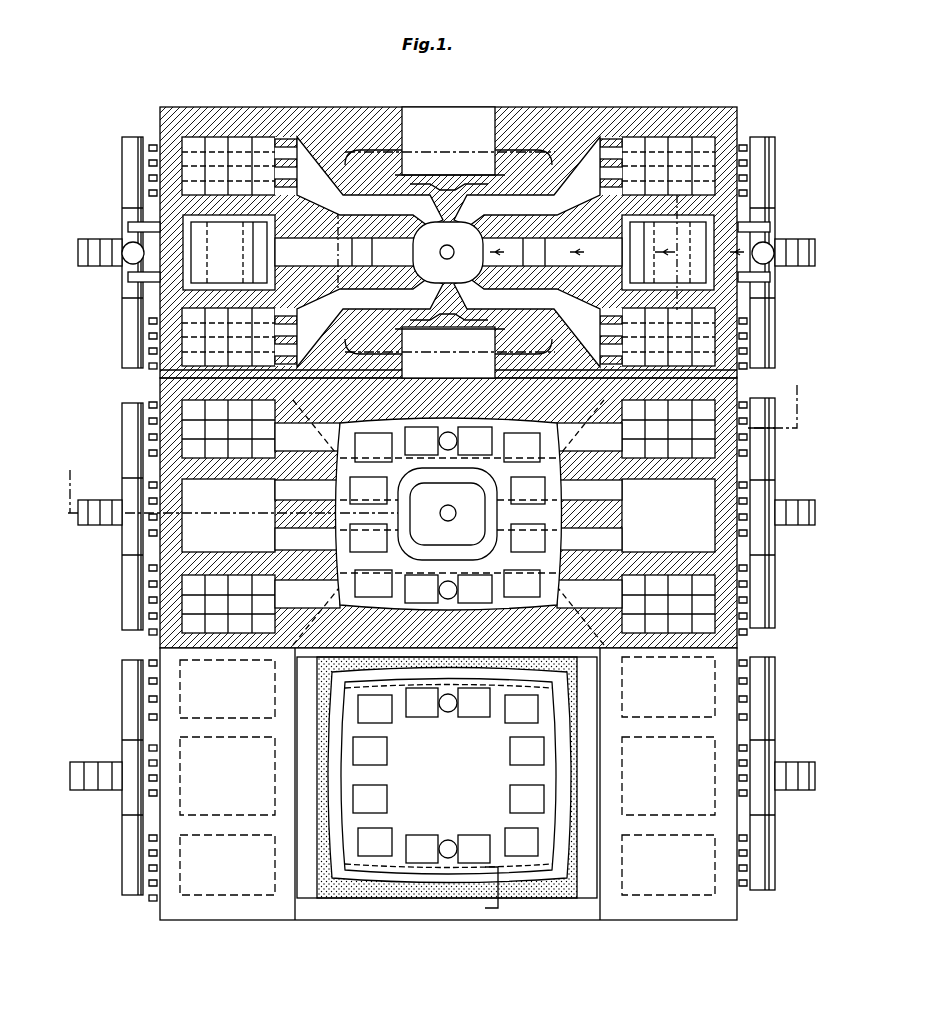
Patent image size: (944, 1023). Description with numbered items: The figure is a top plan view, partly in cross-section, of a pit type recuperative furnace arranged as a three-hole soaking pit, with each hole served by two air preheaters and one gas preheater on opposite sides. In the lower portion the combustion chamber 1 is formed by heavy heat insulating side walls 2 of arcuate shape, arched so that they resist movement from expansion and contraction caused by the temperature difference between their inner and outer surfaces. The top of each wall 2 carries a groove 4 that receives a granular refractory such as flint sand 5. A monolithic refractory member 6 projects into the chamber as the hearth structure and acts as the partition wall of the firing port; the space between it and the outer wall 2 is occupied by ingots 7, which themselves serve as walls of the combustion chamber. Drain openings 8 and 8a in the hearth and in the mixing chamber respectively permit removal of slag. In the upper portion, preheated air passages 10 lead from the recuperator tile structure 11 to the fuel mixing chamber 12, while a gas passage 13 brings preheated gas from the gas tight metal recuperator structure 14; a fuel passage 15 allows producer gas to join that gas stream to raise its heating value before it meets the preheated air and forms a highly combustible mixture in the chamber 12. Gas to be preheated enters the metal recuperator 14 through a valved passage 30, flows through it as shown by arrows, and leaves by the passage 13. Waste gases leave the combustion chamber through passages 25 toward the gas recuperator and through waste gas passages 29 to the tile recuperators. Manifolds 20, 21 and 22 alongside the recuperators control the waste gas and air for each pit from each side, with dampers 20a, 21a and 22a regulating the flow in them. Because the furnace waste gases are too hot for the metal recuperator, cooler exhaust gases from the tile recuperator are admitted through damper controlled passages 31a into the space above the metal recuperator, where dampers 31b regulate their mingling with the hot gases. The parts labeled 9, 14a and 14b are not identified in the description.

The combustion chamber 1 is at (393, 867).
The heat insulating side walls 2 is at (565, 845).
The groove 4 is at (484, 893).
The flint sand 5 is at (553, 895).
The monolithic refractory member 6 is at (430, 543).
The ingots 7 is at (383, 840).
The drain opening 8 is at (443, 258).
The drain opening 8a is at (446, 695).
The sealing line 9 is at (506, 875).
The preheated air passages 10 is at (393, 214).
The recuperator tile structure 11 is at (187, 168).
The fuel mixing chamber 12 is at (475, 259).
The gas passage 13 is at (310, 262).
The gas tight metal recuperator structure 14 is at (227, 262).
The piston core 14a is at (229, 252).
The coil end lugs 14b is at (270, 200).
The fuel passage 15 is at (368, 258).
The manifold 20 is at (800, 262).
The damper 20a is at (153, 370).
The manifold 21 is at (784, 238).
The damper 21a is at (153, 633).
The manifold 22 is at (776, 182).
The damper 22a is at (153, 898).
The waste gas passages 25 is at (308, 500).
The waste gas passages 29 is at (308, 447).
The valved passage 30 is at (130, 280).
The damper controlled passages 31a is at (157, 748).
The dampers 31b is at (157, 763).